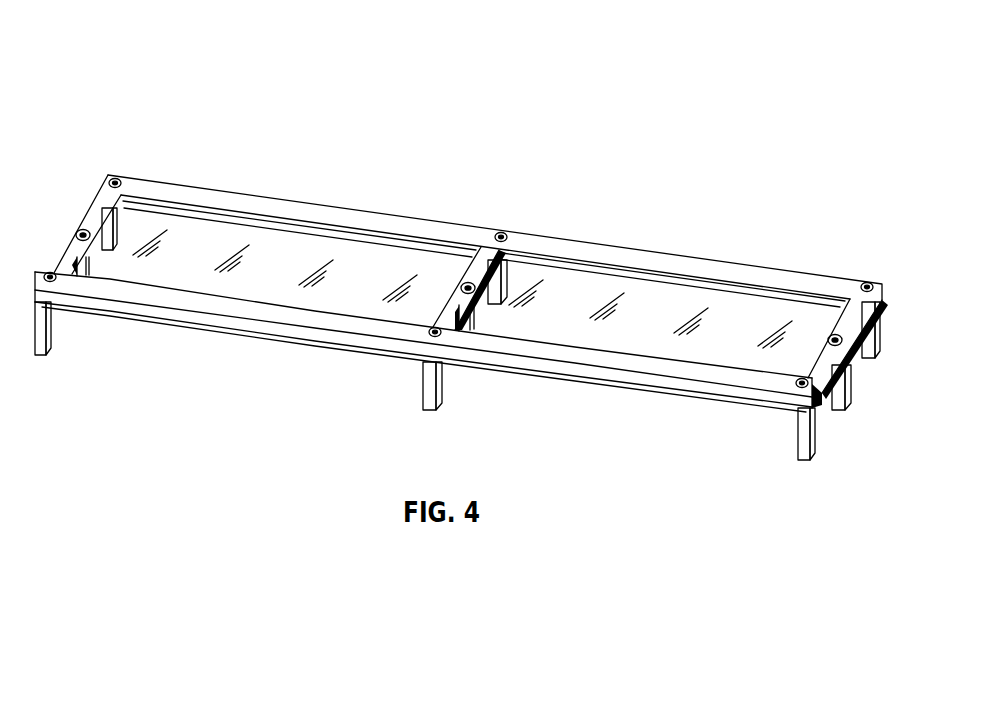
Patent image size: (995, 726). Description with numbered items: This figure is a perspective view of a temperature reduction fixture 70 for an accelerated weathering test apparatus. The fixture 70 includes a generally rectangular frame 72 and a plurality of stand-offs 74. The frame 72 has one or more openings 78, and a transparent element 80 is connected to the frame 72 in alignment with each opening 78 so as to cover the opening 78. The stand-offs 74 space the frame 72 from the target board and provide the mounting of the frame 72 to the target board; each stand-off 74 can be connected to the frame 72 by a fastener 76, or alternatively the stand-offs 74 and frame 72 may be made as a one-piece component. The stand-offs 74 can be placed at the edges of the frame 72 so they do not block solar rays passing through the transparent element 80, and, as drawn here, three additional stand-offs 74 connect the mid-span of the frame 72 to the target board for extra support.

The temperature reduction fixture 70 is at (160, 40).
The frame 72 is at (734, 268).
The stand-offs 74 is at (427, 392).
The fastener 76 is at (867, 283).
The opening 78 is at (359, 263).
The transparent element 80 is at (198, 238).